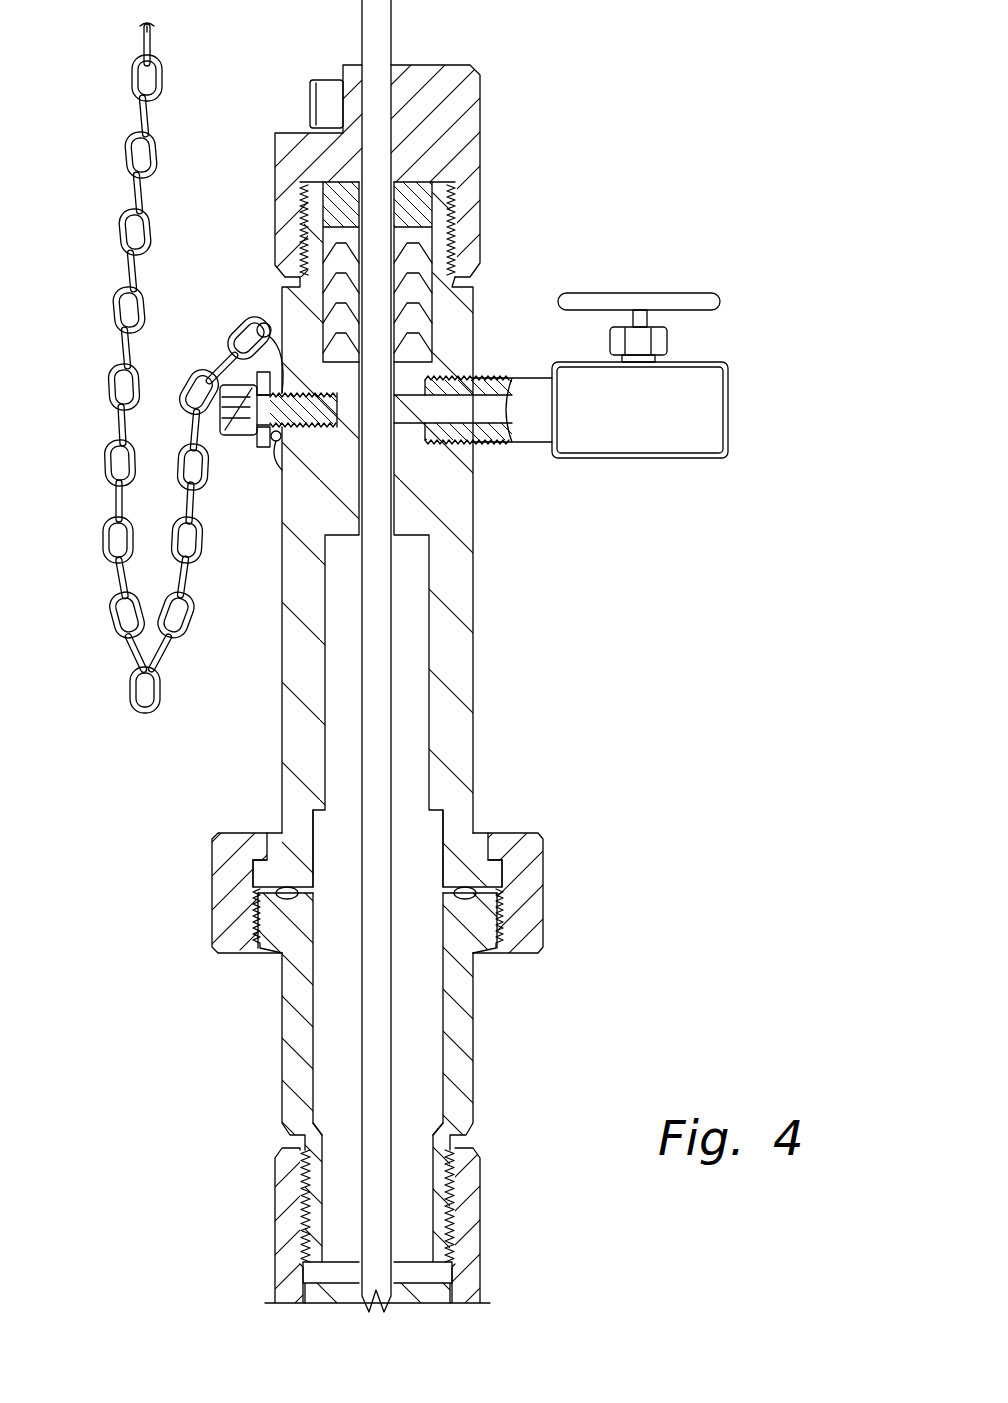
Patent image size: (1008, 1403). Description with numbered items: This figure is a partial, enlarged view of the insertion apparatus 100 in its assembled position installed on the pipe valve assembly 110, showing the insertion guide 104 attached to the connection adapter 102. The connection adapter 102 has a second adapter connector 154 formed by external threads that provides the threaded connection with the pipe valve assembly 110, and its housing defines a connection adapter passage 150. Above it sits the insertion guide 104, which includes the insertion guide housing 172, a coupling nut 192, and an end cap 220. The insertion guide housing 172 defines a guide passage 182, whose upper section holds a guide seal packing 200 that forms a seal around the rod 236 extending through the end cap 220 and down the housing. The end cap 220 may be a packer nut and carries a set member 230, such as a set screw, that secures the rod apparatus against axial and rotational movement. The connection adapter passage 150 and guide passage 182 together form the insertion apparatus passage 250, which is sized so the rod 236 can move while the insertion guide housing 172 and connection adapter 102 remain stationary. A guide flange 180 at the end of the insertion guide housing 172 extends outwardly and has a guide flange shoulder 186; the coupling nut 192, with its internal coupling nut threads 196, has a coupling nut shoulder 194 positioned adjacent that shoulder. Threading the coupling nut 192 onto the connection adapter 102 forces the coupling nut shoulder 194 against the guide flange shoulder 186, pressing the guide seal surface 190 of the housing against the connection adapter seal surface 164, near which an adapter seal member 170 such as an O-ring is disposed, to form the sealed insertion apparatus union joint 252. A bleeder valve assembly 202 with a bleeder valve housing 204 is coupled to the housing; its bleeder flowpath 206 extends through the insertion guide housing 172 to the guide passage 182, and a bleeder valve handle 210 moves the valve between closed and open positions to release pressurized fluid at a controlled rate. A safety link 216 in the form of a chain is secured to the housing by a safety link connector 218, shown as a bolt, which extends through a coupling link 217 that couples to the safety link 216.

The insertion apparatus 100 is at (763, 60).
The connection adapter 102 is at (242, 1080).
The insertion guide 104 is at (242, 730).
The pipe valve assembly 110 is at (217, 1225).
The connection adapter passage 150 is at (415, 920).
The second adapter connector 154 is at (255, 912).
The connection adapter seal surface 164 is at (493, 864).
The adapter seal member 170 is at (500, 925).
The insertion guide housing 172 is at (502, 716).
The guide flange 180 is at (500, 885).
The guide passage 182 is at (412, 840).
The guide flange shoulder 186 is at (256, 850).
The guide seal surface 190 is at (307, 930).
The coupling nut 192 is at (545, 906).
The coupling nut shoulder 194 is at (256, 872).
The coupling nut threads 196 is at (272, 922).
The guide seal packing 200 is at (418, 260).
The bleeder valve assembly 202 is at (750, 340).
The bleeder valve housing 204 is at (711, 459).
The bleeder flowpath 206 is at (416, 396).
The bleeder valve handle 210 is at (700, 293).
The safety link 216 is at (128, 78).
The coupling link 217 is at (281, 446).
The safety link connector 218 is at (256, 376).
The end cap 220 is at (482, 116).
The set member 230 is at (310, 96).
The rod 236 is at (394, 14).
The insertion apparatus passage 250 is at (410, 1100).
The insertion apparatus union joint 252 is at (175, 908).